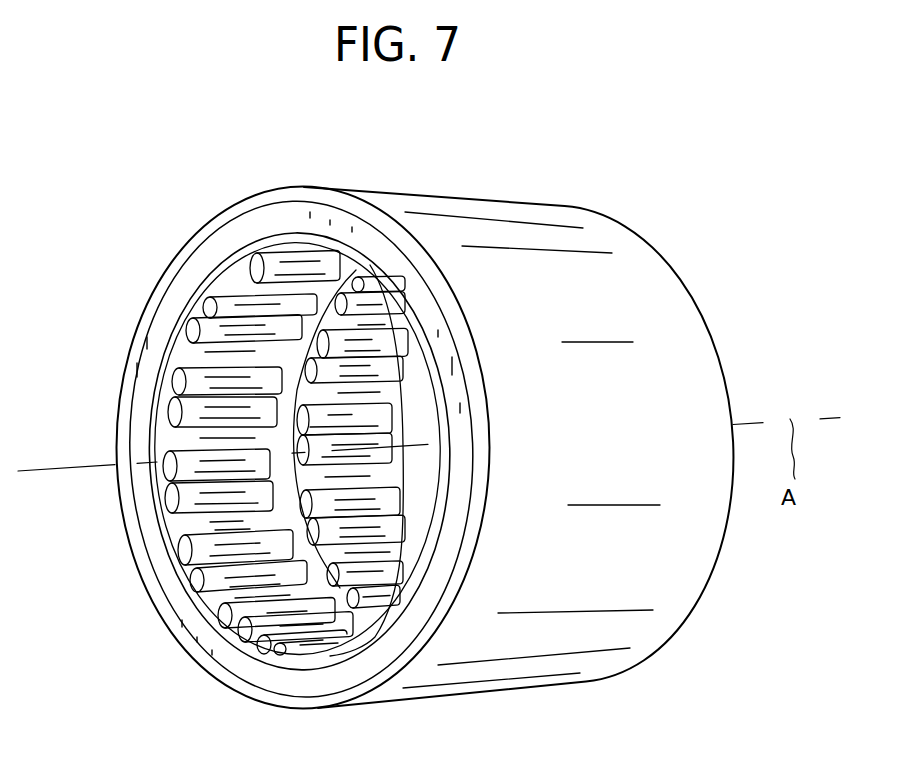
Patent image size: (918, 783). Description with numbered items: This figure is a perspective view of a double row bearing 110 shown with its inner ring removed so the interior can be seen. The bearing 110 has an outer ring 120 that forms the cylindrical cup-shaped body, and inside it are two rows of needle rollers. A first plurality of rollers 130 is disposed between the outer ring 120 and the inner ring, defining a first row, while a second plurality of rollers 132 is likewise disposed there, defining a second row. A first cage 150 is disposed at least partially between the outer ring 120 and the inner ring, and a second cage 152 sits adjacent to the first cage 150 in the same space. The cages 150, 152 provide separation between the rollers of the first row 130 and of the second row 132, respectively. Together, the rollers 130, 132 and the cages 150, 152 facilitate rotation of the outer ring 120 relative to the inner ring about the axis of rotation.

The bearing 110 is at (331, 585).
The outer ring 120 is at (633, 276).
The first plurality of rollers 130 is at (187, 412).
The second plurality of rollers 132 is at (302, 495).
The first cage 150 is at (162, 345).
The second cage 152 is at (305, 398).